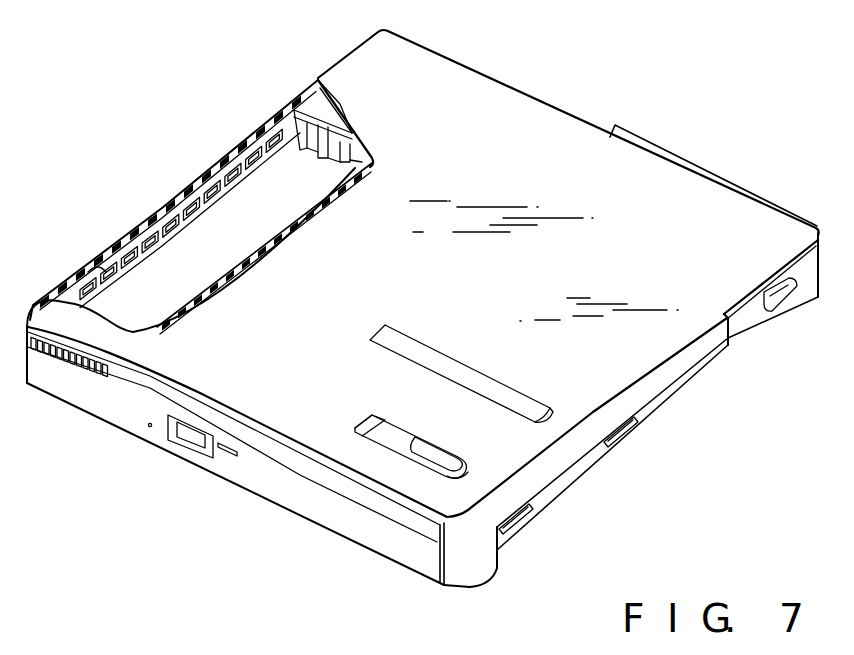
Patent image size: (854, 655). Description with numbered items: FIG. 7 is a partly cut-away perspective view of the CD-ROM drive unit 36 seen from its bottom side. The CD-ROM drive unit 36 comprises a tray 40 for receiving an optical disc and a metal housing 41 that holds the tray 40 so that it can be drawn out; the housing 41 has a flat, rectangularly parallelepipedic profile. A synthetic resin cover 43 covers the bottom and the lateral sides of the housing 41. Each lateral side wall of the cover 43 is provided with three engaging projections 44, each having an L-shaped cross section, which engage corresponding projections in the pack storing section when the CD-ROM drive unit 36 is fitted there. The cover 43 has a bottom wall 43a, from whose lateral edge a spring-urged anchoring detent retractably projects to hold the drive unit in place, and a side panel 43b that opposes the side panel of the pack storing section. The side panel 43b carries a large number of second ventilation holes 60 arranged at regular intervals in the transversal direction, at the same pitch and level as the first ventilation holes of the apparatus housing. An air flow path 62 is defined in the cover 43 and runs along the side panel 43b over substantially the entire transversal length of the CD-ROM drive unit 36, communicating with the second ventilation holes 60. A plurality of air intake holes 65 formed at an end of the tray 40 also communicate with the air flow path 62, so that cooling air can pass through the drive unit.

The CD-ROM drive unit 36 is at (566, 155).
The tray 40 is at (282, 495).
The housing 41 is at (247, 283).
The cover 43 is at (499, 107).
The bottom wall 43a is at (706, 198).
The side panel 43b is at (163, 208).
The engaging projections 44 is at (777, 308).
The second ventilation holes 60 is at (236, 172).
The air flow path 62 is at (282, 160).
The air intake holes 65 is at (92, 362).